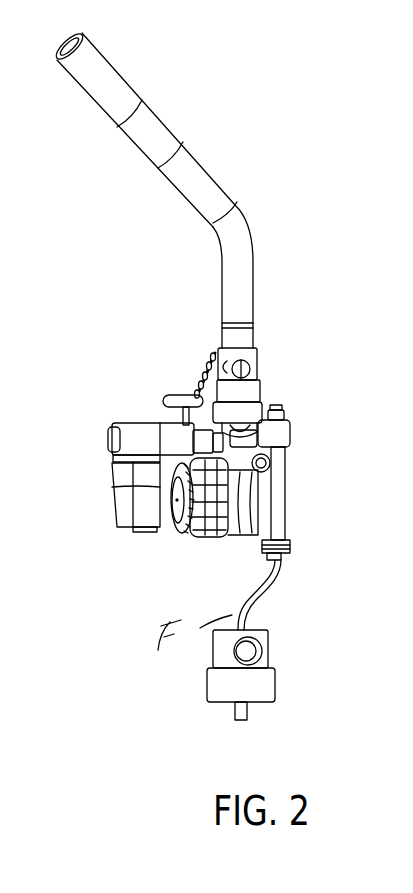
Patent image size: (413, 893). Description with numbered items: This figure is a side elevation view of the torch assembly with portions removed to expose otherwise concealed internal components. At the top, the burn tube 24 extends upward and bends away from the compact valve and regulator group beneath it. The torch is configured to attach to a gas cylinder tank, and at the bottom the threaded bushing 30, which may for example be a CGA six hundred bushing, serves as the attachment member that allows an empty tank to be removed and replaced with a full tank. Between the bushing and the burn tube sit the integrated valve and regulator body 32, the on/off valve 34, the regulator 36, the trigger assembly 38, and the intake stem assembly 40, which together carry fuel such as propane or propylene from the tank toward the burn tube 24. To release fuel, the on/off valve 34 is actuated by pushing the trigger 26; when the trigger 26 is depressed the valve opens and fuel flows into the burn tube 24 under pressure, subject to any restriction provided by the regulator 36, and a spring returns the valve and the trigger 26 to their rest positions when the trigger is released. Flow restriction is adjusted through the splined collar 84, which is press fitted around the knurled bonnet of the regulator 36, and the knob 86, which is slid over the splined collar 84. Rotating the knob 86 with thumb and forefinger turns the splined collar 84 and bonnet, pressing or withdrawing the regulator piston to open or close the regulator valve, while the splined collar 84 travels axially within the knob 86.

The burn tube 24 is at (222, 237).
The trigger 26 is at (128, 503).
The threaded bushing 30 is at (265, 688).
The integrated valve and regulator body 32 is at (280, 467).
The on/off valve 34 is at (298, 437).
The regulator 36 is at (300, 507).
The trigger assembly 38 is at (100, 425).
The intake stem assembly 40 is at (277, 596).
The splined collar 84 is at (178, 525).
The knob 86 is at (202, 533).